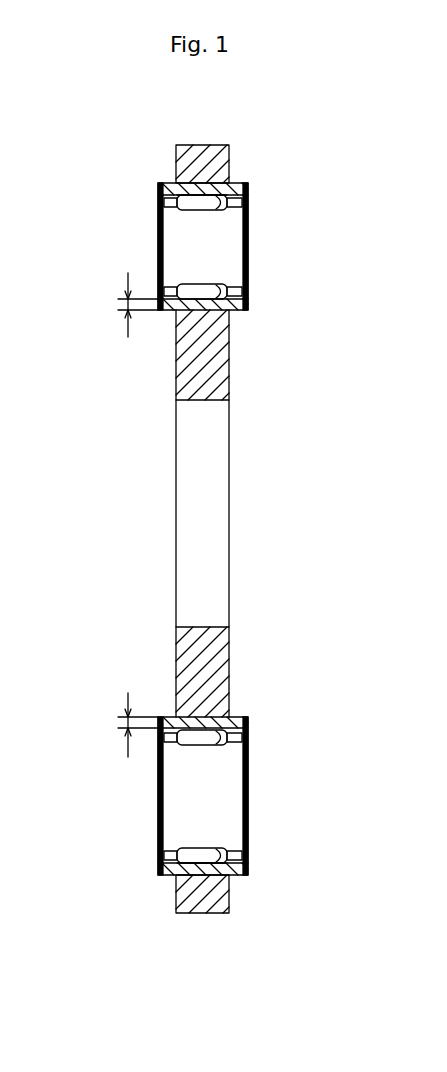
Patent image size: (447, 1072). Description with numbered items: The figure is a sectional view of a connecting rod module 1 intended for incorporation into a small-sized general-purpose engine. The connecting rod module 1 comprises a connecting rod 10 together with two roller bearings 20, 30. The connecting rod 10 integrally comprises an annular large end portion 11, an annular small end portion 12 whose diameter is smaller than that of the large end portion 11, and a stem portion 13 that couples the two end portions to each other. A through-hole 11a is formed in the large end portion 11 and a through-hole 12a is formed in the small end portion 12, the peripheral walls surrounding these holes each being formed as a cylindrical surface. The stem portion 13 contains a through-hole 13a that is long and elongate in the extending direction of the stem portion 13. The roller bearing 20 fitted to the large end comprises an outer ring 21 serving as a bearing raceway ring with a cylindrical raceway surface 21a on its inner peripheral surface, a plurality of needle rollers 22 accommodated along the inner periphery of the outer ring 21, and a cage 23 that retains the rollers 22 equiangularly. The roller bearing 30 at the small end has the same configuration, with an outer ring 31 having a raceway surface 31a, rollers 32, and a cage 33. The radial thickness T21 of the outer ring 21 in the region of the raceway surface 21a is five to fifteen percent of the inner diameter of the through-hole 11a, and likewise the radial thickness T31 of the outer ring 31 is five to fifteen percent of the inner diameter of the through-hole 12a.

The connecting rod module 1 is at (256, 355).
The connecting rod 10 is at (174, 373).
The large end portion 11 is at (175, 888).
The through-hole 11a is at (222, 740).
The small end portion 12 is at (175, 160).
The through-hole 12a is at (228, 282).
The stem portion 13 is at (190, 548).
The through-hole 13a is at (213, 503).
The roller bearing 20 is at (256, 799).
The outer ring 21 is at (237, 868).
The raceway surface 21a is at (212, 853).
The rollers 22 is at (192, 848).
The cage 23 is at (165, 858).
The roller bearing 30 is at (256, 250).
The outer ring 31 is at (236, 187).
The raceway surface 31a is at (215, 200).
The rollers 32 is at (195, 213).
The cage 33 is at (165, 203).
The radial thickness of outer ring 31 T31 is at (120, 303).
The radial thickness of outer ring 21 T21 is at (120, 721).